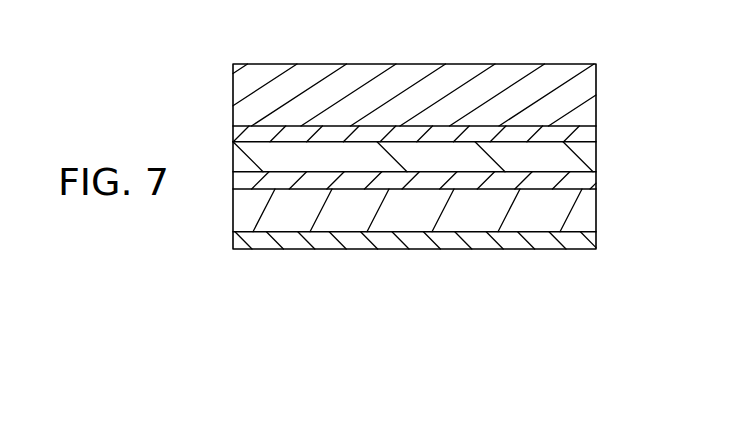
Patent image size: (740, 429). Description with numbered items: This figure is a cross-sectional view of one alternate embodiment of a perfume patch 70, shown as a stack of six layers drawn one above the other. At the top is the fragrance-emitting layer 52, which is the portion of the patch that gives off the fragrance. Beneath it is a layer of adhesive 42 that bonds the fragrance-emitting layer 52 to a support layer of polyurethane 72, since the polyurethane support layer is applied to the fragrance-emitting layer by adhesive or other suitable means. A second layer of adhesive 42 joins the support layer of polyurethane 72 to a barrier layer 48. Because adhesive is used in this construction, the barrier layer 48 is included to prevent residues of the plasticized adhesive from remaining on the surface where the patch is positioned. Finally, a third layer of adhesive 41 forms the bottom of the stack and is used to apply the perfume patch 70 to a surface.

The perfume patch 70 is at (551, 54).
The fragrance-emitting layer 52 is at (596, 92).
The layer of adhesive 42 is at (596, 130).
The support layer of polyurethane 72 is at (596, 160).
The barrier layer 48 is at (596, 210).
The third layer of adhesive 41 is at (596, 239).